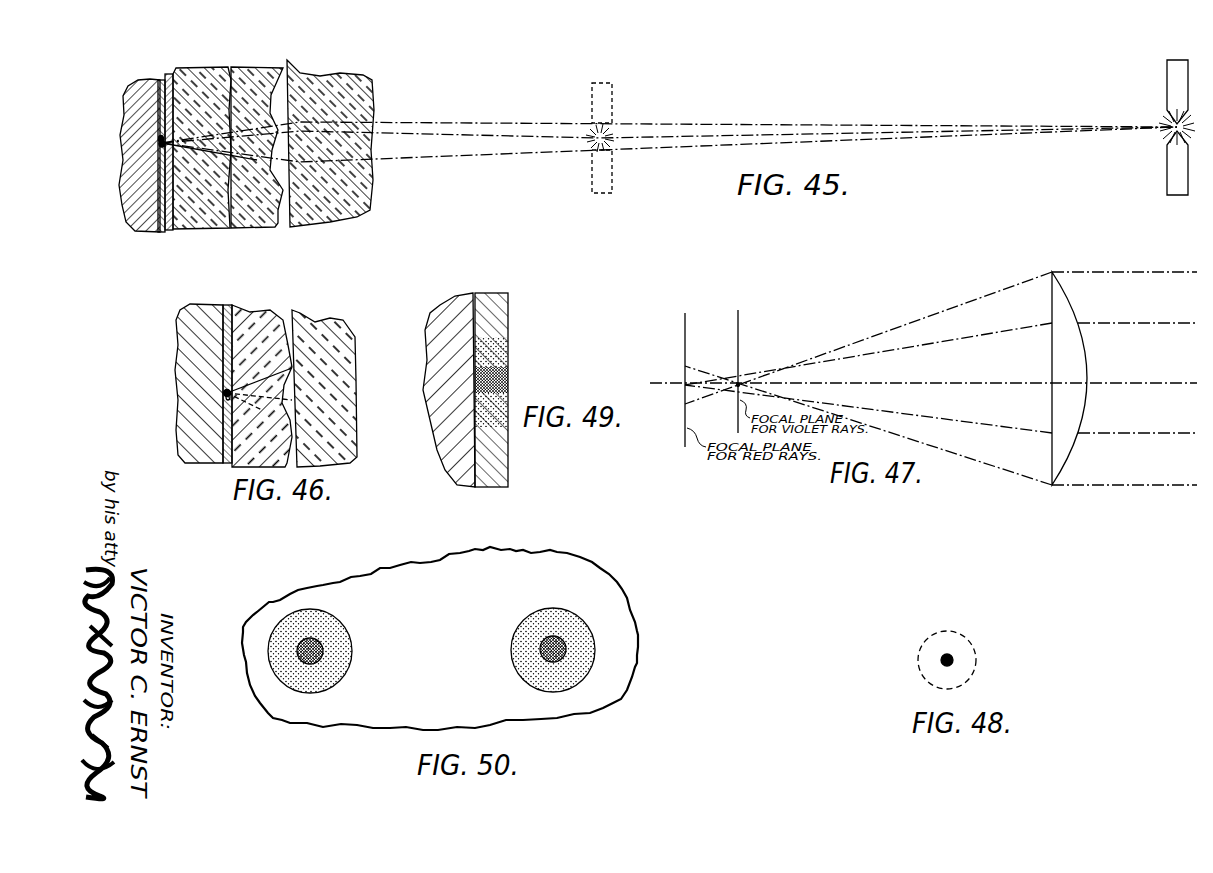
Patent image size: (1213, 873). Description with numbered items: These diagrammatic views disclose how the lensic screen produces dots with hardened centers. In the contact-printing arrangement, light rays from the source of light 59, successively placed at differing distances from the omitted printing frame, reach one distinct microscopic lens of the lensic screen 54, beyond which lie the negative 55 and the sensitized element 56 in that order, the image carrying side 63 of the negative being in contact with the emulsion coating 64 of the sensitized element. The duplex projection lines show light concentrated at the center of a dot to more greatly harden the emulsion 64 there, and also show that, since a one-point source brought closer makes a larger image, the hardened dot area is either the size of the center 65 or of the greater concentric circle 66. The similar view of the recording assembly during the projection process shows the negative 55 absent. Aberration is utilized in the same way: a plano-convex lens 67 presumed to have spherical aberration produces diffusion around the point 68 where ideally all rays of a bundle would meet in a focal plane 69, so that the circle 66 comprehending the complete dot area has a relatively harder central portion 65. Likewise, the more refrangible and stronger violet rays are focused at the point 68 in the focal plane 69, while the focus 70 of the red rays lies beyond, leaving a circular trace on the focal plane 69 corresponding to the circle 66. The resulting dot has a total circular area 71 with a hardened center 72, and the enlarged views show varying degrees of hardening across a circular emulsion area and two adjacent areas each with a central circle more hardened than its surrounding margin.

In FIG. 45, the lensic screen 54 is at (292, 73).
In FIG. 46, the lensic screen 54 is at (293, 398).
In FIG. 45, the negative 55 is at (212, 68).
In FIG. 45, the sensitized element 56 is at (137, 92).
In FIG. 46, the sensitized element 56 is at (182, 350).
In FIG. 49, the sensitized element 56 is at (440, 330).
In FIG. 45, the source of light 59 is at (616, 138).
In FIG. 45, the image carrying side of the negative 63 is at (170, 75).
In FIG. 45, the emulsion coating 64 is at (160, 80).
In FIG. 46, the emulsion coating 64 is at (228, 306).
In FIG. 49, the emulsion coating 64 is at (508, 312).
In FIG. 50, the emulsion coating 64 is at (440, 638).
In FIG. 45, the center of the dot 65 is at (158, 146).
In FIG. 46, the center of the dot 65 is at (224, 393).
In FIG. 49, the center of the dot 65 is at (510, 380).
In FIG. 50, the center of the dot 65 is at (318, 642).
In FIG. 45, the concentric circle 66 is at (158, 140).
In FIG. 46, the concentric circle 66 is at (225, 397).
In FIG. 49, the concentric circle 66 is at (511, 352).
In FIG. 50, the concentric circle 66 is at (342, 662).
In FIG. 47, the plano-convex lens 67 is at (1085, 360).
In FIG. 47, the focal point 68 is at (735, 380).
In FIG. 47, the focal plane 69 is at (740, 345).
In FIG. 47, the focus of the red rays 70 is at (683, 383).
In FIG. 48, the total circular dot area 71 is at (955, 638).
In FIG. 48, the hardened center 72 is at (942, 662).